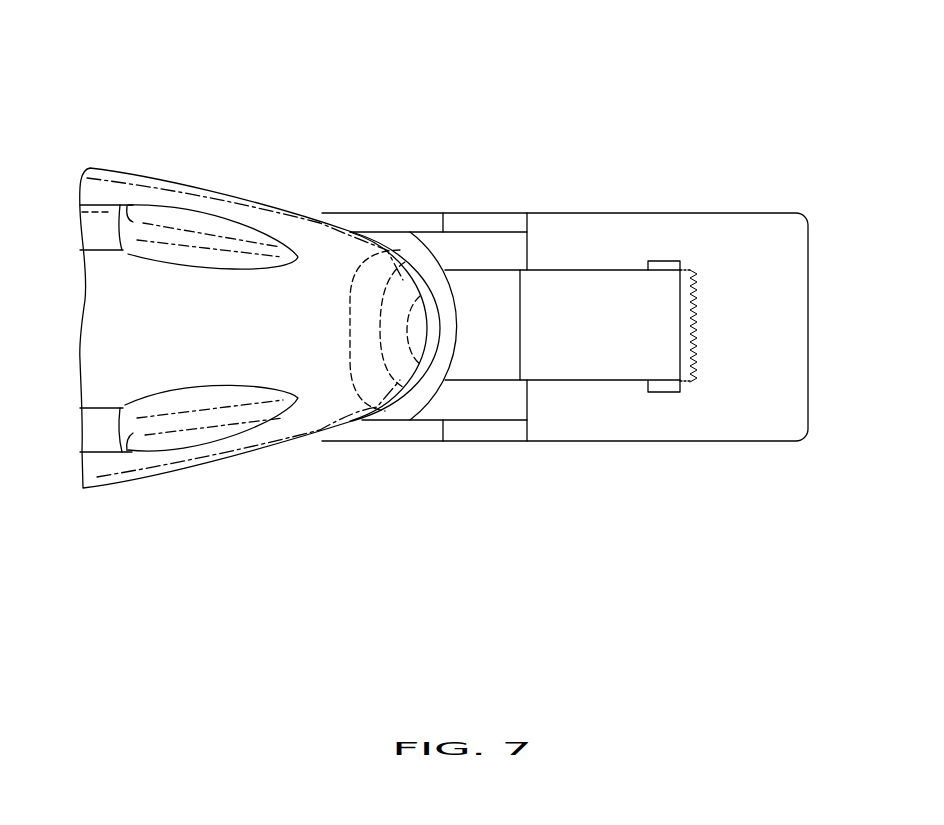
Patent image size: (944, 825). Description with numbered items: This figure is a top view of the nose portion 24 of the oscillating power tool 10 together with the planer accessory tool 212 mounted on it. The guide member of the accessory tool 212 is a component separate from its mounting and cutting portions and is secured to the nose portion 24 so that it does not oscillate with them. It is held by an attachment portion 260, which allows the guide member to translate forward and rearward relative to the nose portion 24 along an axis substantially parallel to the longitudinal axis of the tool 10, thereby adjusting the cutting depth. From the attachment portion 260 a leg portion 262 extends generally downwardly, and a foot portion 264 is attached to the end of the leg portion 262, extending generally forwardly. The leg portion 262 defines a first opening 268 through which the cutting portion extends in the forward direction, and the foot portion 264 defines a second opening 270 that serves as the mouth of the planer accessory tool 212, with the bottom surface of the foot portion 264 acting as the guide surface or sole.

The tool 10 is at (205, 117).
The nose portion 24 is at (263, 201).
The planer accessory tool 212 is at (697, 101).
The attachment portion 260 is at (348, 432).
The leg portion 262 is at (388, 211).
The foot portion 264 is at (712, 423).
The first opening 268 is at (474, 259).
The second opening 270 is at (668, 263).